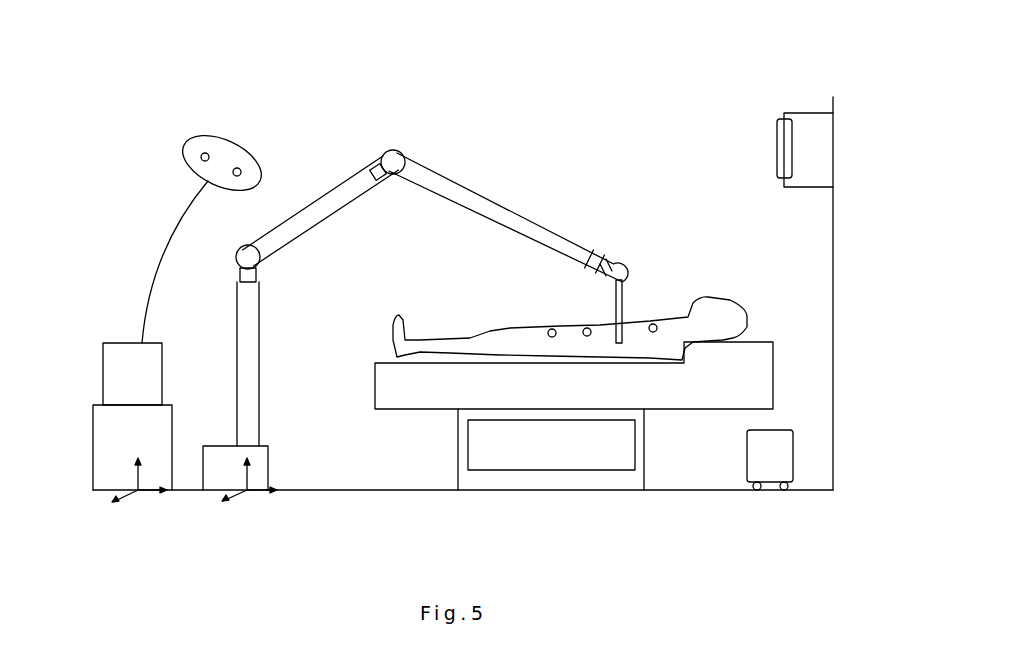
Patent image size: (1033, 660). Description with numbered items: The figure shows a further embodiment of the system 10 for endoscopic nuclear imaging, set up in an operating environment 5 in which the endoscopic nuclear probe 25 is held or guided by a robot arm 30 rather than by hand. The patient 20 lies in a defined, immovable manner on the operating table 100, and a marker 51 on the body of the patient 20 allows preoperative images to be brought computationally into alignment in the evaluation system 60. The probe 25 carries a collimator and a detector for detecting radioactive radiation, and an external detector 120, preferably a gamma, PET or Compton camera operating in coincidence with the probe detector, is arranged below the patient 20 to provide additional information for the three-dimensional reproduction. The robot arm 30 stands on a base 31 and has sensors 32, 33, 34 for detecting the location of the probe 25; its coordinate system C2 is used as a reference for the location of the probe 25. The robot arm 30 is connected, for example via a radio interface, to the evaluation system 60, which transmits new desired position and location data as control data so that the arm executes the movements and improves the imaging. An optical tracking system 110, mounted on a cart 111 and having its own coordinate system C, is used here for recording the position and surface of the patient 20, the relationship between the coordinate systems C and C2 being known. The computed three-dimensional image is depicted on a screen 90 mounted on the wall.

The system 10 is at (107, 71).
The operating room 5 is at (372, 492).
The optical tracking system 110 is at (233, 150).
The camera cart 111 is at (92, 422).
The coordinate system C is at (132, 473).
The coordinate system C2 is at (268, 468).
The robot base 31 is at (213, 470).
The sensor 34 is at (236, 262).
The sensor 32 is at (373, 160).
The robot arm 30 is at (518, 210).
The sensor 33 is at (607, 263).
The endoscopic nuclear probe 25 is at (625, 308).
The patient 20 is at (395, 318).
The marker 51 is at (658, 322).
The operating table 100 is at (763, 362).
The external detector 120 is at (528, 462).
The evaluation system 60 is at (775, 433).
The screen 90 is at (783, 143).